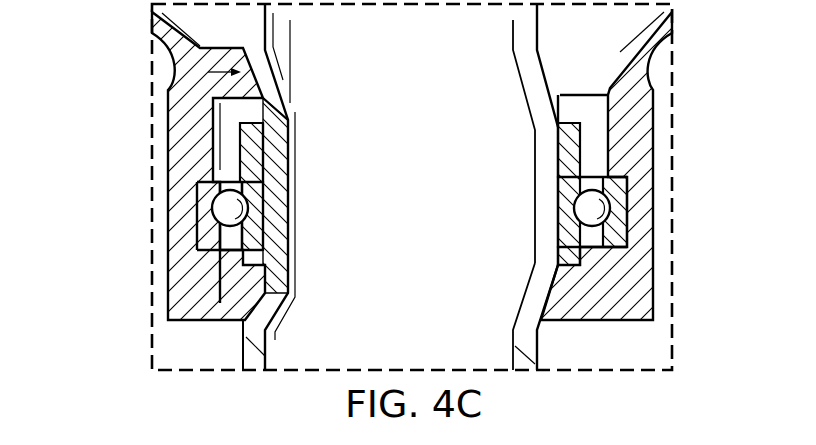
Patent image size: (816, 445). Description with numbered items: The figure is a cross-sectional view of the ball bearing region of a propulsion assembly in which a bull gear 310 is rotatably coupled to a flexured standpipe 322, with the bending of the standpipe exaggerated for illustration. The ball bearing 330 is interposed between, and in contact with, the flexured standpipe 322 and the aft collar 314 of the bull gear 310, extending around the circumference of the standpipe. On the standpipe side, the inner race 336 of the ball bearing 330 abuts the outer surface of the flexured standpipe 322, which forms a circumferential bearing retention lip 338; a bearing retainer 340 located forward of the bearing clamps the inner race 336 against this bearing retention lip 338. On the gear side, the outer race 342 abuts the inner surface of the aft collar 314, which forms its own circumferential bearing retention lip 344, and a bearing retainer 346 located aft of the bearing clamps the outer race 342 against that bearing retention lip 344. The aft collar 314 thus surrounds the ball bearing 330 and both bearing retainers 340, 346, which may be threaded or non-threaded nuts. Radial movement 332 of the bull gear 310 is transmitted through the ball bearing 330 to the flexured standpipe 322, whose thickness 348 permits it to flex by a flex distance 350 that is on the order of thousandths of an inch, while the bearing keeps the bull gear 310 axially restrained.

The bull gear 310 is at (146, 166).
The aft collar 314 is at (168, 117).
The flexured standpipe 322 is at (541, 331).
The ball bearing 330 is at (600, 208).
The radial movement 332 is at (612, 72).
The inner race 336 is at (263, 207).
The bearing retention lip 338 is at (568, 272).
The bearing retainer 340 is at (566, 121).
The outer race 342 is at (208, 228).
The bearing retention lip 344 is at (203, 194).
The bearing retainer 346 is at (208, 268).
The thickness 348 is at (203, 352).
The flex distance 350 is at (222, 35).